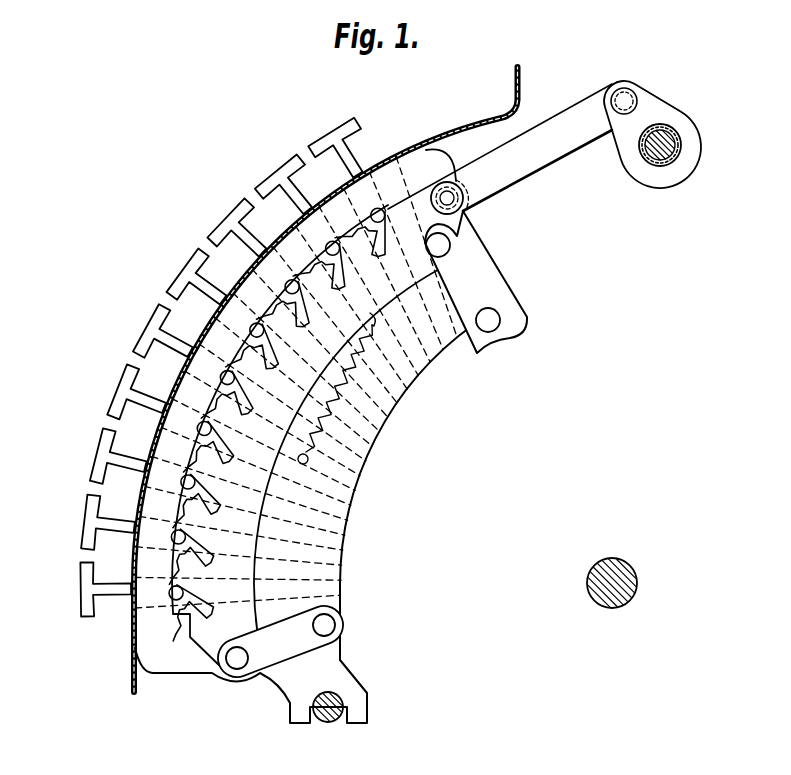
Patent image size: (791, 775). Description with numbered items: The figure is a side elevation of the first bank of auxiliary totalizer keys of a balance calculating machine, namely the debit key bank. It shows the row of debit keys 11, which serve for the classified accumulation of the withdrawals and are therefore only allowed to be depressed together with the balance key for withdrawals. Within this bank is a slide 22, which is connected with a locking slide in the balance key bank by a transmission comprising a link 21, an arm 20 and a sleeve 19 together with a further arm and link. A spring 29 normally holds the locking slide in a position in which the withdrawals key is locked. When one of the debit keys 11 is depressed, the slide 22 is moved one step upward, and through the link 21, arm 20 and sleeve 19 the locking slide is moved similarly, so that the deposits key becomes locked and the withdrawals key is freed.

The debit keys 11 is at (193, 262).
The sleeve 19 is at (657, 165).
The arm 20 is at (622, 148).
The link 21 is at (538, 166).
The slide 22 is at (244, 617).
The spring 29 is at (366, 370).